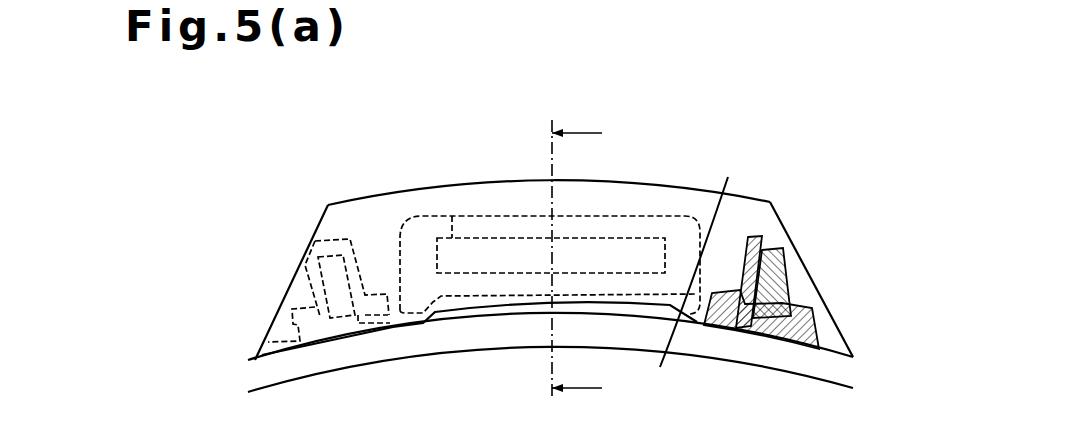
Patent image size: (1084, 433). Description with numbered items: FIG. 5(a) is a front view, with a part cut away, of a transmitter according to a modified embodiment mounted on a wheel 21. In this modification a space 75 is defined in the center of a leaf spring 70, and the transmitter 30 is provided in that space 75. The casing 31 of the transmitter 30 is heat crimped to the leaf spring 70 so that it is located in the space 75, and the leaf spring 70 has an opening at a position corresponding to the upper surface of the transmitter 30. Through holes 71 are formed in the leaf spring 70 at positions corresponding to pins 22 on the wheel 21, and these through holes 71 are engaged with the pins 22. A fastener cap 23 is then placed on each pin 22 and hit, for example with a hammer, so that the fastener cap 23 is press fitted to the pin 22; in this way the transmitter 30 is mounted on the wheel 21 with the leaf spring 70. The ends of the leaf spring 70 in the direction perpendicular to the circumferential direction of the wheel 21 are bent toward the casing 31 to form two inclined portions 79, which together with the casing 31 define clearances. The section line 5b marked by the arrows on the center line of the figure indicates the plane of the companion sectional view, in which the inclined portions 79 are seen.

The wheel 21 is at (810, 378).
The pin 22 is at (779, 271).
The fastener cap 23 is at (762, 237).
The transmitter 30 is at (452, 216).
The casing 31 is at (494, 214).
The leaf spring 70 is at (478, 303).
The through hole 71 is at (810, 318).
The space 75 is at (395, 241).
The inclined portion 79 is at (680, 188).
The section line 5b is at (598, 262).